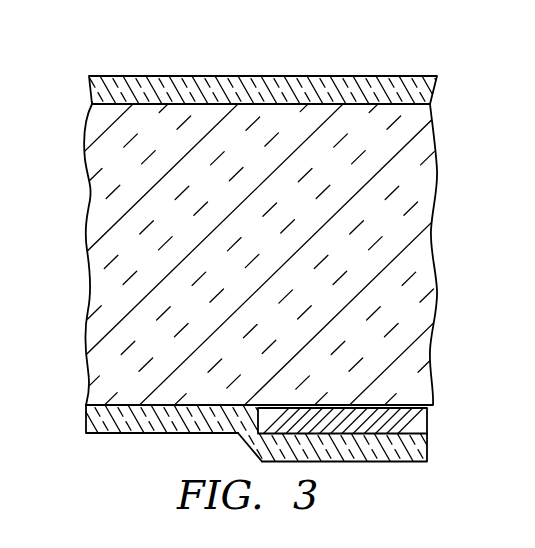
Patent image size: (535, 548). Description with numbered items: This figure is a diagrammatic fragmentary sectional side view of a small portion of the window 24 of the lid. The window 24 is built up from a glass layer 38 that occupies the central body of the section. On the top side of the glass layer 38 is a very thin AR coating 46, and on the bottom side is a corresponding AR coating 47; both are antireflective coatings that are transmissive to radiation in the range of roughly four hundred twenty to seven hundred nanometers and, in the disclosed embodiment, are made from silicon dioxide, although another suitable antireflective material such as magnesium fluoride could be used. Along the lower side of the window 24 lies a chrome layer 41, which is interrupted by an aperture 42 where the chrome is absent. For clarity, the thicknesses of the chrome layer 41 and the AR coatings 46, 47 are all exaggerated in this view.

The window 24 is at (241, 64).
The AR coating 46 is at (92, 96).
The glass layer 38 is at (88, 236).
The AR coating 47 is at (85, 412).
The chrome layer 41 is at (427, 425).
The aperture 42 is at (247, 419).